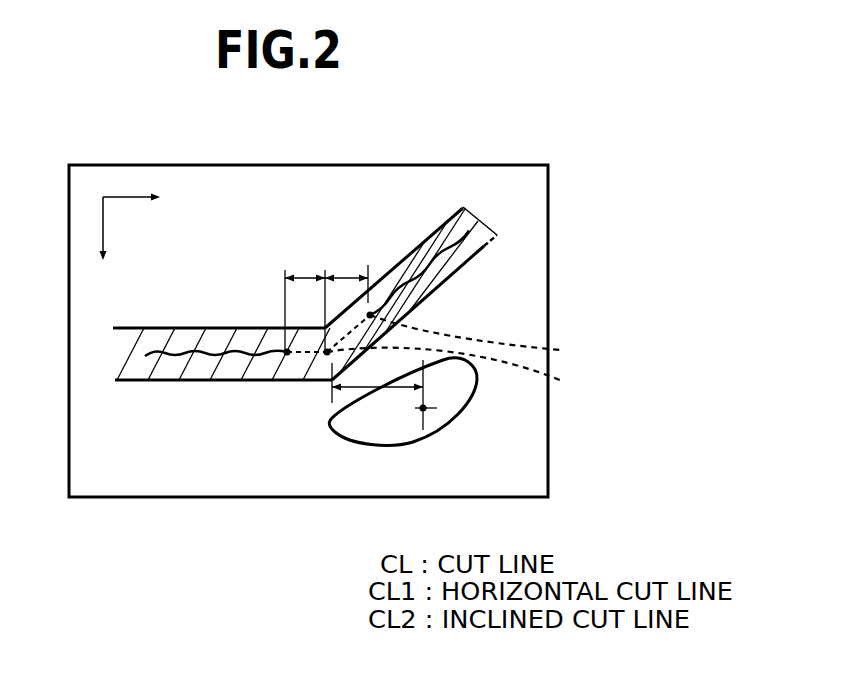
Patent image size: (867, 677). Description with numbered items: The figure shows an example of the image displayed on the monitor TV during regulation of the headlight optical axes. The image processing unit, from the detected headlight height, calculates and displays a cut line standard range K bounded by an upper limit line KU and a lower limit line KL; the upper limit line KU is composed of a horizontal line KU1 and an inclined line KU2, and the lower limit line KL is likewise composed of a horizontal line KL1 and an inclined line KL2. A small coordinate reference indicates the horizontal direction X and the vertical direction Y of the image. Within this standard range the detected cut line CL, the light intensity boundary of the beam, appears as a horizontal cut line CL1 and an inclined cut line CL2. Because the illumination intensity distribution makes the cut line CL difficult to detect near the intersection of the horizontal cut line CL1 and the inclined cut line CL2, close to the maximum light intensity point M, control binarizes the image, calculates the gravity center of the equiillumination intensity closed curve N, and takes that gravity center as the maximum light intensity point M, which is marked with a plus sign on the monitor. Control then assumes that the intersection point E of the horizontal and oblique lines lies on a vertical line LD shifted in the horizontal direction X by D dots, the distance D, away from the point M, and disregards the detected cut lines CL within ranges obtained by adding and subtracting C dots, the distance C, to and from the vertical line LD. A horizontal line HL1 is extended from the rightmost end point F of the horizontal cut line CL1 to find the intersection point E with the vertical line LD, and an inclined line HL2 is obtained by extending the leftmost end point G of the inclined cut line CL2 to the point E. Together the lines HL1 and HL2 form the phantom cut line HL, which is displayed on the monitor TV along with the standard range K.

The horizontal direction X is at (141, 204).
The Y axis Y is at (106, 245).
The cut line standard range K is at (481, 217).
The upper limit line KU is at (370, 212).
The horizontal line KU1 is at (227, 328).
The inclined line KU2 is at (388, 274).
The lower limit line KL is at (322, 528).
The horizontal line KL1 is at (226, 381).
The inclined line KL2 is at (290, 381).
The cut line CL is at (205, 362).
The horizontal cut line CL1 is at (166, 381).
The inclined cut line CL2 is at (445, 258).
The point of intersection E is at (287, 354).
The rightmost end point F is at (325, 353).
The leftmost end point G is at (373, 315).
The horizontal line HL1 is at (490, 338).
The inclined line HL2 is at (472, 370).
The phantom cut line HL is at (626, 333).
The C-dots C is at (326, 301).
The D-dots D is at (377, 395).
The vertical line LD is at (325, 397).
The equiillumination intensity closed curve N is at (377, 447).
The maximum light intensity point M is at (423, 407).